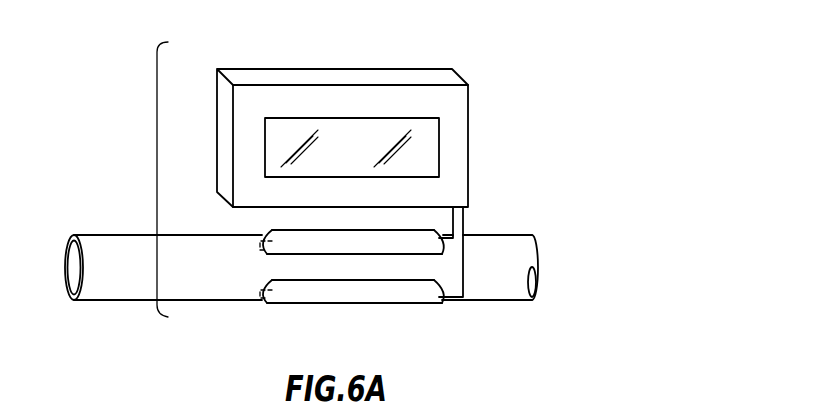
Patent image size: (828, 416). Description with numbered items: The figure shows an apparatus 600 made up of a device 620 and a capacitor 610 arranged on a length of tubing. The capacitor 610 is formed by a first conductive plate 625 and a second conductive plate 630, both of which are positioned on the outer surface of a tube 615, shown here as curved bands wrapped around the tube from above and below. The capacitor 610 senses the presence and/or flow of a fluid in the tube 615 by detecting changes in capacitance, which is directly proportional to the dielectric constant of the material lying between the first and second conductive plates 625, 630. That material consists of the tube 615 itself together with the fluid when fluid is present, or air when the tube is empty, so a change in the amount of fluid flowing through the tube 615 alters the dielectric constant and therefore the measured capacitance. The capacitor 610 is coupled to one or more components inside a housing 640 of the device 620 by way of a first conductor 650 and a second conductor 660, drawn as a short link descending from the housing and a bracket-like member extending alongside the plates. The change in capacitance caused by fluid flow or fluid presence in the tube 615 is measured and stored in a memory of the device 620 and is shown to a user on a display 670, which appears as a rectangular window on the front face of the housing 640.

The apparatus 600 is at (653, 95).
The capacitor 610 is at (257, 314).
The tube 615 is at (509, 235).
The device 620 is at (157, 172).
The first conductive plate 625 is at (283, 255).
The second conductive plate 630 is at (368, 305).
The housing 640 is at (418, 69).
The first conductor 650 is at (468, 218).
The second conductor 660 is at (463, 272).
The display 670 is at (439, 146).